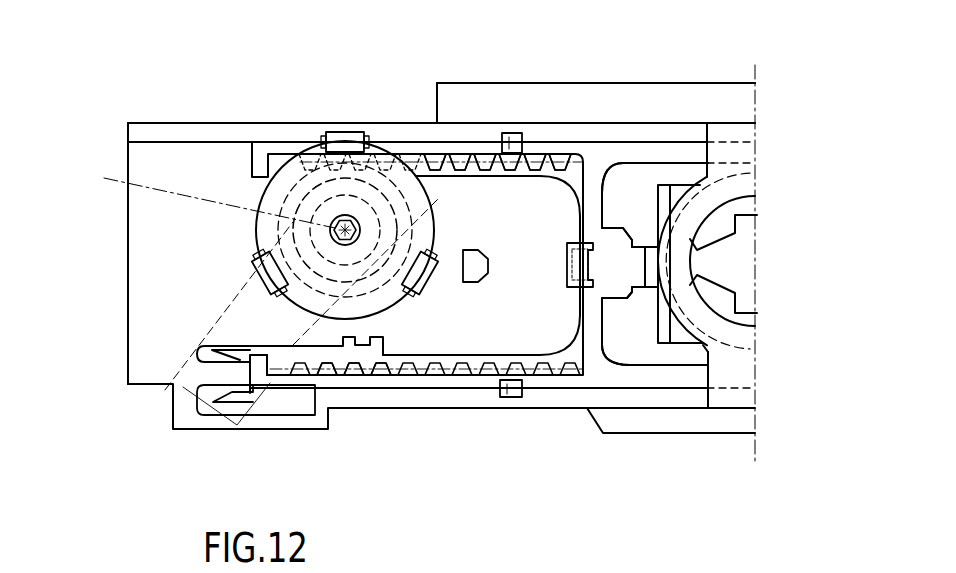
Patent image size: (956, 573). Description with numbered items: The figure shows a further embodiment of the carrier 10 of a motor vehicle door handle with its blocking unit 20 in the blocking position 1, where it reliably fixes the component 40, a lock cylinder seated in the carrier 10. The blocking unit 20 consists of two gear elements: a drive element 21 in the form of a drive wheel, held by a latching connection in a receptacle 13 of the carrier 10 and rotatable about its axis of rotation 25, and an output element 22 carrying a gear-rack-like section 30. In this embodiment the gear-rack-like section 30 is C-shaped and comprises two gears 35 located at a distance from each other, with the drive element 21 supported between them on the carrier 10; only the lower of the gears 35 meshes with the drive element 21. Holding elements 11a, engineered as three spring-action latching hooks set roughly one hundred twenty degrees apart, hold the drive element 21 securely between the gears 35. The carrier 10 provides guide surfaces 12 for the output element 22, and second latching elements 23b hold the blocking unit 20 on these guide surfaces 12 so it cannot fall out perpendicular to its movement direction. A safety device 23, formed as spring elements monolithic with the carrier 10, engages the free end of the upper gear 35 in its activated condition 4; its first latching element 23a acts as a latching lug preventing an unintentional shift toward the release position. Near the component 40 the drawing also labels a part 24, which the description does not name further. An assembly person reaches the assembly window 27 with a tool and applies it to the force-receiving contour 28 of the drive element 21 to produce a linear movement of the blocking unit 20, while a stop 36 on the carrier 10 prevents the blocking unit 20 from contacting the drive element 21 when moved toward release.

The blocking position 1 is at (723, 40).
The activated condition 4 is at (441, 200).
The carrier 10 is at (127, 391).
The holding elements 11a is at (346, 138).
The guide surfaces 12 is at (140, 244).
The receptacle 13 is at (390, 320).
The blocking unit 20 is at (618, 387).
The drive element 21 is at (433, 205).
The output element 22 is at (626, 348).
The safety device 23 is at (199, 394).
The first latching element 23a is at (277, 312).
The second latching elements 23b is at (513, 143).
The flange 24 is at (668, 378).
The axis of rotation 25 is at (353, 216).
The assembly window 27 is at (207, 197).
The force-receiving contour 28 is at (335, 222).
The gear-rack-like section 30 is at (482, 150).
The gears 35 is at (545, 166).
The stop 36 is at (476, 265).
The component 40 is at (742, 350).